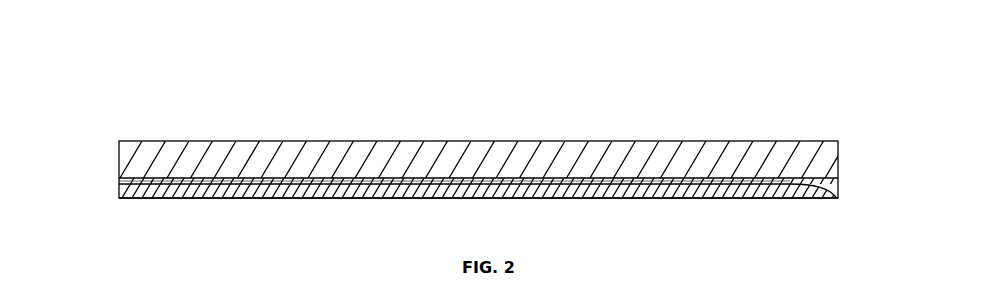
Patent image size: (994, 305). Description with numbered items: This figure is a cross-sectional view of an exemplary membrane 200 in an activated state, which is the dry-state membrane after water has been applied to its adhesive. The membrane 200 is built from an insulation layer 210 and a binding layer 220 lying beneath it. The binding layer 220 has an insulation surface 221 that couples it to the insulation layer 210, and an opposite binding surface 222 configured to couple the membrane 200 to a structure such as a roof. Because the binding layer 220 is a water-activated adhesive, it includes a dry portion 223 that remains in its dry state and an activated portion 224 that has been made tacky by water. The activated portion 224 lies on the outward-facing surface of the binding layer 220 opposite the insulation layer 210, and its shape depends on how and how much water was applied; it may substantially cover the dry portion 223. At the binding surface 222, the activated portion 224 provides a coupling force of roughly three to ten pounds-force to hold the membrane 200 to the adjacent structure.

The membrane 200 is at (163, 112).
The insulation layer 210 is at (838, 142).
The binding layer 220 is at (838, 184).
The insulation surface 221 is at (838, 182).
The binding surface 222 is at (839, 197).
The dry portion 223 is at (119, 180).
The activated portion 224 is at (119, 184).